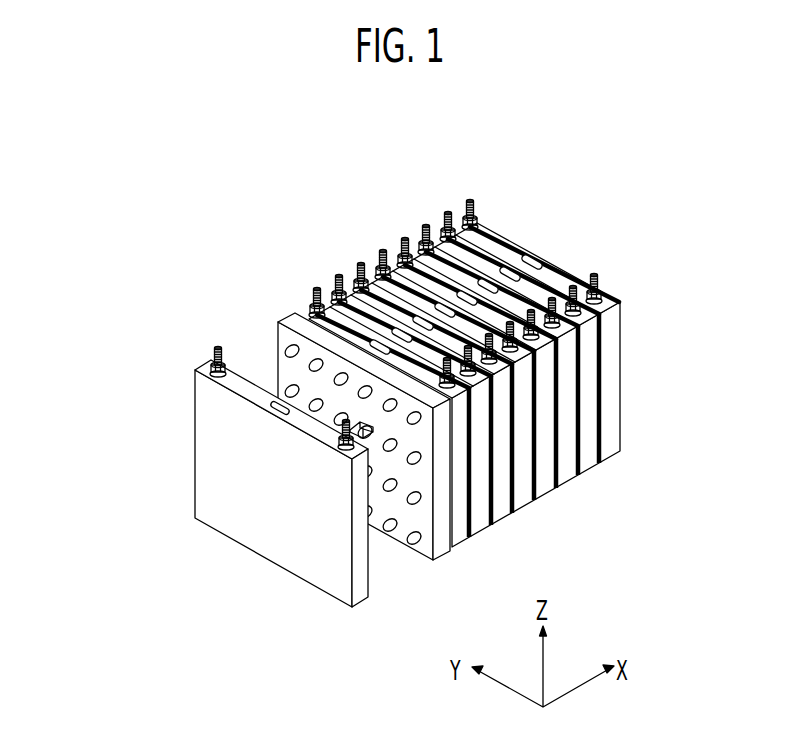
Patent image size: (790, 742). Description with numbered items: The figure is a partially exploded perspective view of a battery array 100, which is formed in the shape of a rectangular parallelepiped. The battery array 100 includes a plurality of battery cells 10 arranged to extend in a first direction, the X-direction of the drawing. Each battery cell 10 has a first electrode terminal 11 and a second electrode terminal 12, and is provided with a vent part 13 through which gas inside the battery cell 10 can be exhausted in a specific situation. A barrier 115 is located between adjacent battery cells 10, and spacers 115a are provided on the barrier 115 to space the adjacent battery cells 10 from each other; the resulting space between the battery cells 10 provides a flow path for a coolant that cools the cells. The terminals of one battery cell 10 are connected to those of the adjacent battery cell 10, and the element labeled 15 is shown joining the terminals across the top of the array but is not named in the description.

The battery array 100 is at (115, 166).
The battery cell 10 is at (201, 362).
The first electrode terminal 11 is at (469, 203).
The second electrode terminal 12 is at (596, 273).
The vent part 13 is at (533, 258).
The bus bar 15 is at (424, 249).
The barrier 115 is at (279, 321).
The spacer 115a is at (286, 348).